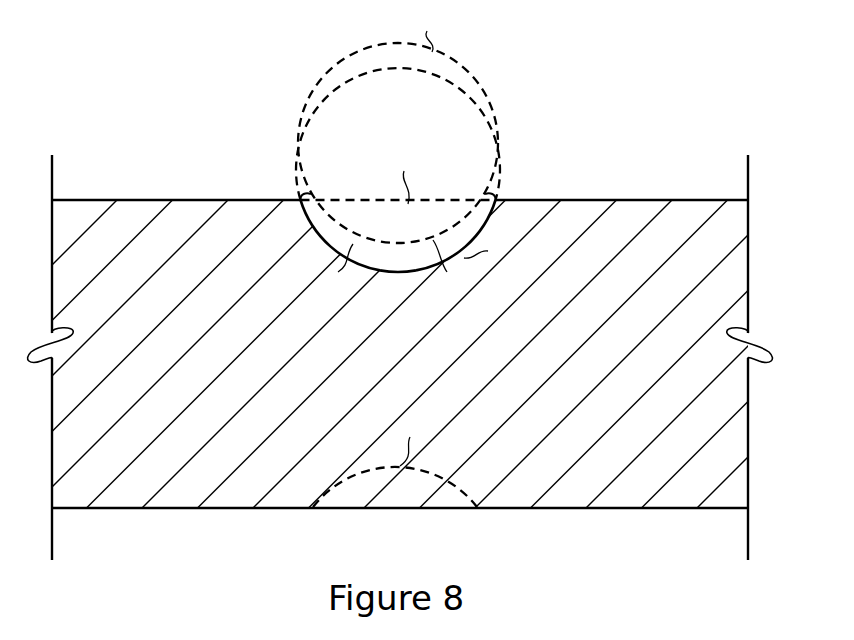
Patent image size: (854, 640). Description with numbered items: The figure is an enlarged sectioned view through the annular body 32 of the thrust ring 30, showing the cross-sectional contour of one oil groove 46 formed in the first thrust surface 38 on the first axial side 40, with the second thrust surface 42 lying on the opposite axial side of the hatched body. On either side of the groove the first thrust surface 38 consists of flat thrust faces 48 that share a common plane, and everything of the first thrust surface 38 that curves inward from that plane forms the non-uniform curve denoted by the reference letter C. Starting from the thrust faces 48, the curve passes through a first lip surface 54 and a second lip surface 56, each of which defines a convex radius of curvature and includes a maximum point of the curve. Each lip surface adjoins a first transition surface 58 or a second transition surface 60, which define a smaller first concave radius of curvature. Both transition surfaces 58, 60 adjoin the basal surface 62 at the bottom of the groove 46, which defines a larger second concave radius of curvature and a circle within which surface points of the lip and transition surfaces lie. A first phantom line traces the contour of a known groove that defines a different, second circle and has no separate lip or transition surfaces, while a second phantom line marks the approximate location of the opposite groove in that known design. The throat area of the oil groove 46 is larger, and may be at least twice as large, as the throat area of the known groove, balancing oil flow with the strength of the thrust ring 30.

The thrust ring 30 is at (114, 151).
The thrust faces 48 is at (163, 192).
The first thrust surface 38 is at (622, 163).
The first axial side 40 is at (600, 192).
The annular body 32 is at (222, 492).
The second thrust surface 42 is at (552, 518).
The oil groove 46 is at (366, 268).
The first lip surface 54 is at (315, 198).
The second lip surface 56 is at (481, 198).
The first transition surface 58 is at (333, 240).
The second transition surface 60 is at (465, 240).
The basal surface 62 is at (398, 262).